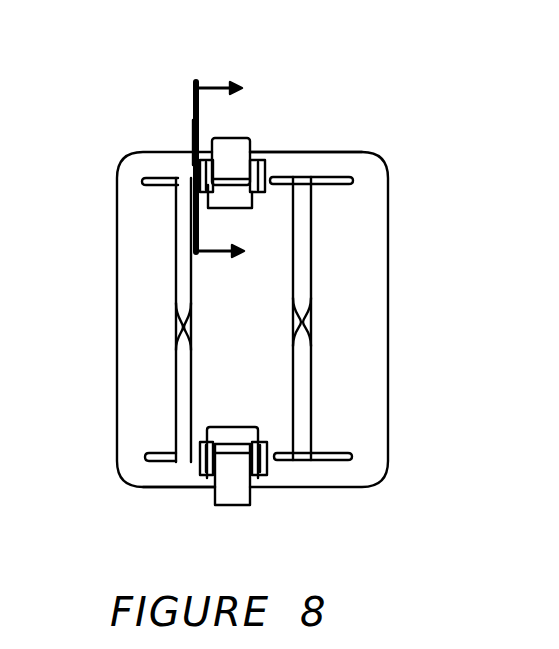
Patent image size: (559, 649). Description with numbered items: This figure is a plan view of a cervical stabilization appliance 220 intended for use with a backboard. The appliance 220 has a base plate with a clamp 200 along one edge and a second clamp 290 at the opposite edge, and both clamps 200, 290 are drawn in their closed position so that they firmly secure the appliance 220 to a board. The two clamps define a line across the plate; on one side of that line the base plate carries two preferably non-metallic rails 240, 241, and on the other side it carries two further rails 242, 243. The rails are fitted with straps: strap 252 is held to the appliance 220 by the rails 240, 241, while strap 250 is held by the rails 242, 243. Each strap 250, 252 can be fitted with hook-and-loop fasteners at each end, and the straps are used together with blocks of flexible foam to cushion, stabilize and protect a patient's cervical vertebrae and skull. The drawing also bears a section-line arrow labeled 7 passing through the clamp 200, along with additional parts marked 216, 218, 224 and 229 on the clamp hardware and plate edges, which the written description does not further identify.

The section line 7- 7 is at (195, 82).
The clamp 200 is at (192, 158).
The bottom wall 216 is at (187, 488).
The top wall 218 is at (326, 152).
The cervical appliance 220 is at (344, 158).
The upper clamp block 224 is at (235, 152).
The clamp brackets 229 is at (220, 195).
The rail 240 is at (148, 455).
The rail 241 is at (147, 182).
The rail 242 is at (352, 456).
The rail 243 is at (353, 180).
The strap 250 is at (312, 321).
The strap 252 is at (180, 262).
The clamp 290 is at (242, 490).